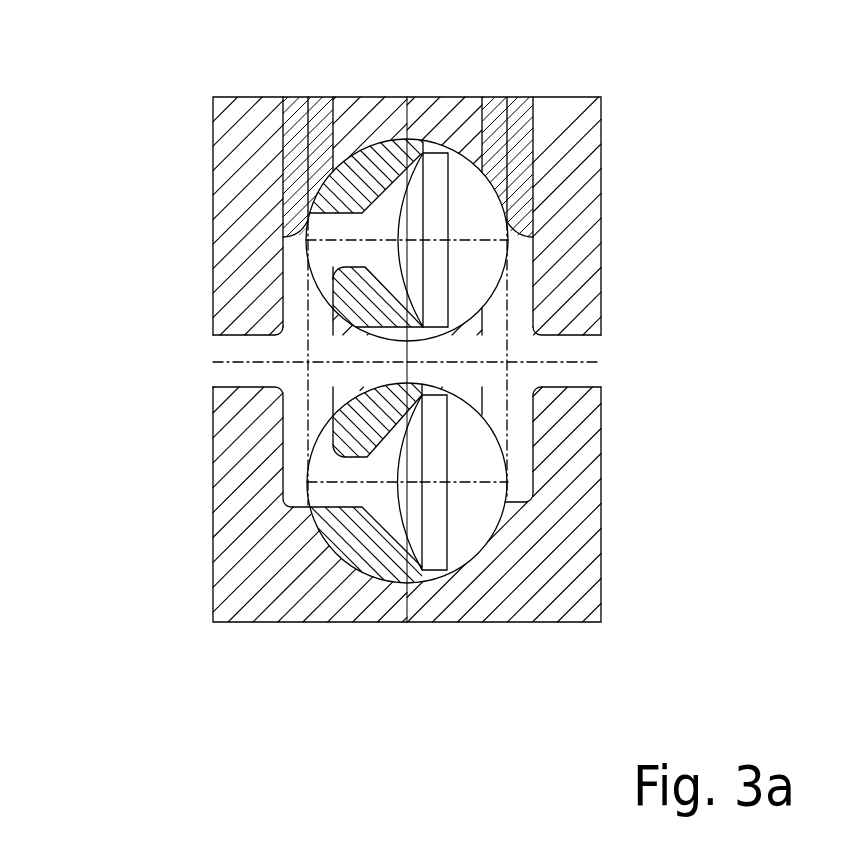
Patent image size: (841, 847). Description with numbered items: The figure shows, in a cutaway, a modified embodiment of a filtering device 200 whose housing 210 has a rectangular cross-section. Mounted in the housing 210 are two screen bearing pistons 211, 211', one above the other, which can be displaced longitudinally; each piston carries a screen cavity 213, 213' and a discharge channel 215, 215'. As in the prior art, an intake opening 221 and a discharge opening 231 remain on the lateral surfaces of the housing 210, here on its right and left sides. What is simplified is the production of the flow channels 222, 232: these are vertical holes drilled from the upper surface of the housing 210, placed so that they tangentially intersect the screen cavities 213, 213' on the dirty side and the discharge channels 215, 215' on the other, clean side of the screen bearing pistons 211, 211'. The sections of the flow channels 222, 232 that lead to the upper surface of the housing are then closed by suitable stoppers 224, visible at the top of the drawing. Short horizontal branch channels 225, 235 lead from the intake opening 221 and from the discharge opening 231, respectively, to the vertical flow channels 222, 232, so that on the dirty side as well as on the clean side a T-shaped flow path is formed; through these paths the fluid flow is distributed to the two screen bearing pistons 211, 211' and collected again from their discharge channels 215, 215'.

The filtering device 200 is at (114, 90).
The housing 210 is at (242, 115).
The screen bearing piston 211 is at (365, 173).
The screen bearing piston 211' is at (364, 544).
The screen cavity 213 is at (540, 240).
The screen cavity 213' is at (545, 483).
The discharge channel 215 is at (225, 206).
The discharge channel 215' is at (222, 510).
The intake opening 221 is at (612, 362).
The flow channel 222 is at (520, 438).
The stopper 224 is at (315, 115).
The branch channel 225 is at (552, 350).
The discharge opening 231 is at (198, 362).
The flow channel 232 is at (293, 292).
The branch channel 235 is at (257, 347).